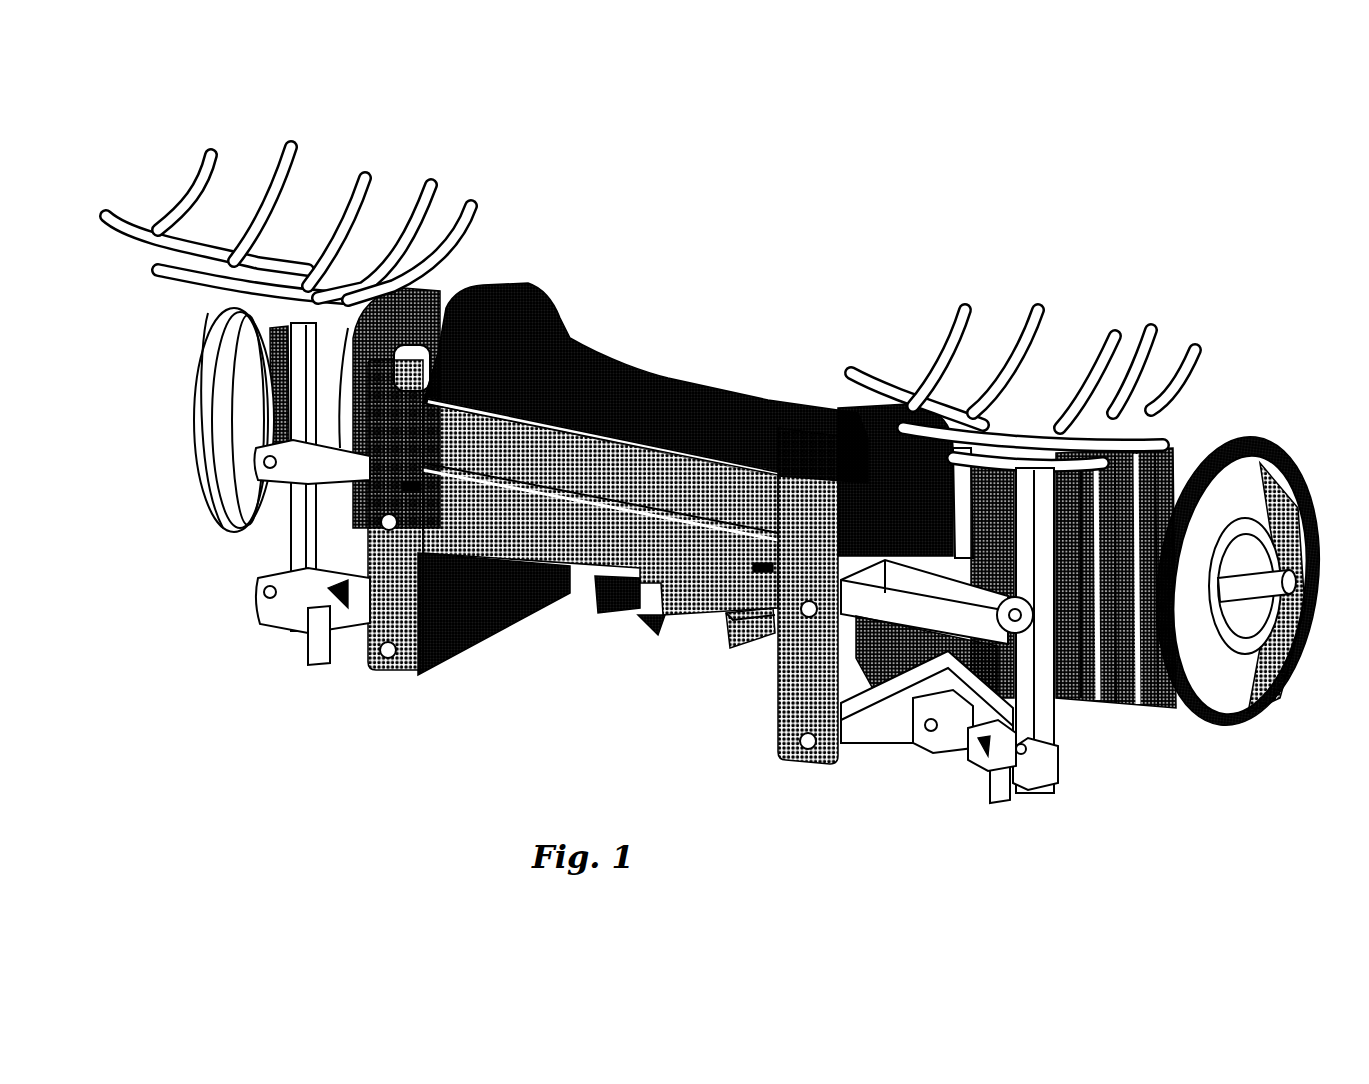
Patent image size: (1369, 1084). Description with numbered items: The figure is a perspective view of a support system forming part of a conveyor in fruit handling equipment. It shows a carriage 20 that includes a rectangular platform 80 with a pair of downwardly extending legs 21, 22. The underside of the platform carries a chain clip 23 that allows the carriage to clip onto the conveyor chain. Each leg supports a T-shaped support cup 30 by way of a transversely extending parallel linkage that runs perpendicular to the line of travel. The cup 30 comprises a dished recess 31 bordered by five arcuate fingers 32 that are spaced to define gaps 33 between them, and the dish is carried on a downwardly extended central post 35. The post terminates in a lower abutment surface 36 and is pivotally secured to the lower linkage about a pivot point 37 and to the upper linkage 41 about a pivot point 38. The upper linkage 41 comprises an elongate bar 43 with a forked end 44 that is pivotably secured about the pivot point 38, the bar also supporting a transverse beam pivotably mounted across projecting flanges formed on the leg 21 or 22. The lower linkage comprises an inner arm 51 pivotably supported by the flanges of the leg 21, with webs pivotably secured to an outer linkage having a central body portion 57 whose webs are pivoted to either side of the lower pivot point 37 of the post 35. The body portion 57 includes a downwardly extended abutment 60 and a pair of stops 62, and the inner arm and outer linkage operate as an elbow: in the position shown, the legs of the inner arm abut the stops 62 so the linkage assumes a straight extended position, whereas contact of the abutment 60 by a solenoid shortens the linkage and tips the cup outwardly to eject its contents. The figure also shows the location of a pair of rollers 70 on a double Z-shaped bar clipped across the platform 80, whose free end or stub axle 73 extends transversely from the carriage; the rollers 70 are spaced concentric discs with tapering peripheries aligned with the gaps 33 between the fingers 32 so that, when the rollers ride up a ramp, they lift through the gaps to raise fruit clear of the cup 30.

The carriage 20 is at (641, 310).
The leg 21 is at (398, 662).
The leg 22 is at (781, 748).
The chain clip 23 is at (640, 612).
The T-shaped support cup 30 is at (161, 415).
The dished recess 31 is at (357, 170).
The arcuate fingers 32 is at (204, 148).
The gaps 33 is at (323, 191).
The central post 35 is at (265, 530).
The lower abutment surface 36 is at (262, 620).
The pivot point 37 is at (1020, 741).
The pivot point 38 is at (258, 460).
The upper linkage 41 is at (778, 683).
The elongate bar 43 is at (833, 545).
The forked end 44 is at (792, 470).
The inner arm 51 is at (840, 705).
The central body portion 57 is at (953, 740).
The abutment 60 is at (315, 652).
The stops 62 is at (958, 742).
The rollers 70 is at (1280, 452).
The stub axle 73 is at (1268, 576).
The rectangular platform 80 is at (522, 608).